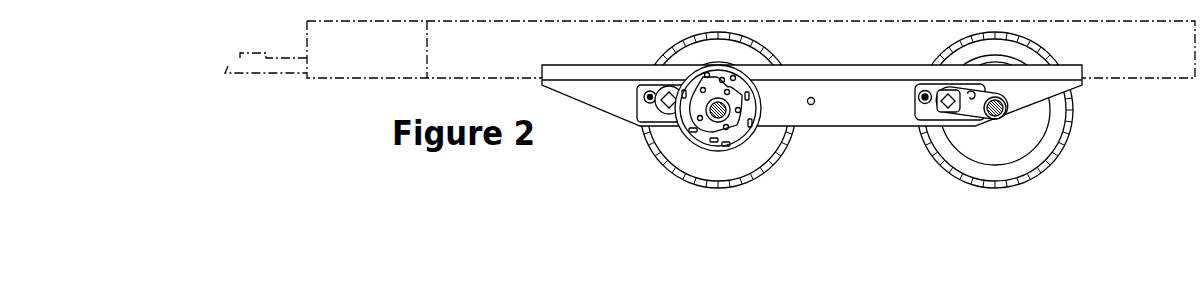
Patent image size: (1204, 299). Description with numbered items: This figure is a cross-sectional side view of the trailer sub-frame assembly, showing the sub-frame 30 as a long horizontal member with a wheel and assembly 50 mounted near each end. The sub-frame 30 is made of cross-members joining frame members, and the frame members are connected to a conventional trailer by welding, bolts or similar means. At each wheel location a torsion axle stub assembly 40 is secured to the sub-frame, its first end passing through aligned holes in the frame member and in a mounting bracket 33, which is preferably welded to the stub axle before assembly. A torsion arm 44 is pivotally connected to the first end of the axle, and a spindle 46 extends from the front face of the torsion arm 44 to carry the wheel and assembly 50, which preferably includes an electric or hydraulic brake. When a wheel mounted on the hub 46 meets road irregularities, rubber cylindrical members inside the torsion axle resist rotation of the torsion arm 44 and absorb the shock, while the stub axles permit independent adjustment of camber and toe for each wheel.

The sub-frame 30 is at (843, 132).
The mounting bracket 33 is at (645, 110).
The torsion axle stub assembly 40 is at (958, 126).
The torsion arm 44 is at (668, 86).
The spindle 46 is at (724, 114).
The wheel and assembly 50 is at (692, 182).